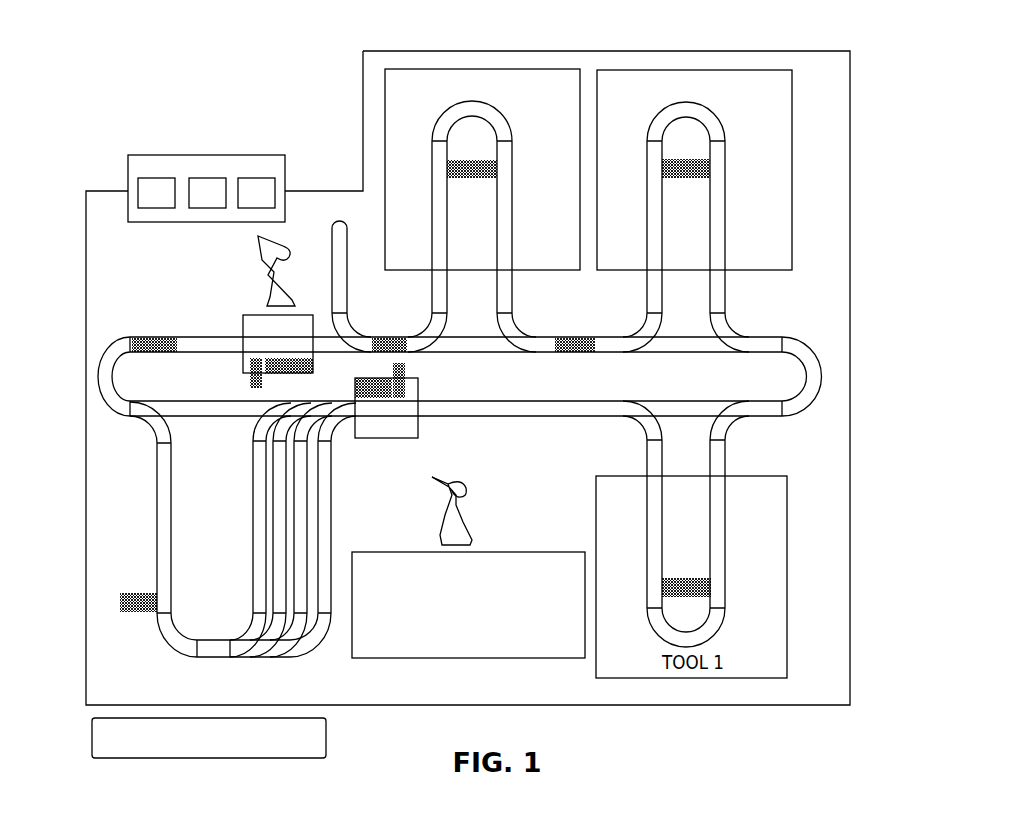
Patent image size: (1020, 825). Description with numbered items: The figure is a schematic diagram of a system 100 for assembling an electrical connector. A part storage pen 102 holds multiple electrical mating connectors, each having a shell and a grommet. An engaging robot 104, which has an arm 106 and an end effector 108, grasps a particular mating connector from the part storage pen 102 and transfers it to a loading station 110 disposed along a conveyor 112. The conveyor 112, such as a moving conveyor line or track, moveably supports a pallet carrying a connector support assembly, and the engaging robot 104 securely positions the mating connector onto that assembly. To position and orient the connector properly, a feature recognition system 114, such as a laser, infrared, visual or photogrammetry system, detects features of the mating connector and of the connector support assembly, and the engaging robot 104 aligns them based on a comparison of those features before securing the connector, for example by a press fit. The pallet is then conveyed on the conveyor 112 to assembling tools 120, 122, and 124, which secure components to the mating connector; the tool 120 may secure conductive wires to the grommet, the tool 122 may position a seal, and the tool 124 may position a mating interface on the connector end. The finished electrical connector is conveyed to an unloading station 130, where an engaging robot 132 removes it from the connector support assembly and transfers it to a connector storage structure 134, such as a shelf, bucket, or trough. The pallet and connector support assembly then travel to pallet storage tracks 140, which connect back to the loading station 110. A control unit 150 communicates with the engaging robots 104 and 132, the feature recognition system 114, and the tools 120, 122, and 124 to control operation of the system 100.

The system 100 is at (131, 100).
The part storage pen 102 is at (497, 551).
The engaging robot 104 is at (456, 506).
The arm 106 is at (464, 484).
The end effector 108 is at (433, 488).
The loading station 110 is at (422, 400).
The conveyor 112 is at (418, 418).
The feature recognition system 114 is at (407, 378).
The tool 120 is at (833, 521).
The tool 122 is at (770, 100).
The tool 124 is at (548, 77).
The unloading station 130 is at (248, 312).
The engaging robot 132 is at (284, 242).
The connector storage structure 134 is at (229, 163).
The pallet storage tracks 140 is at (253, 548).
The control unit 150 is at (90, 735).